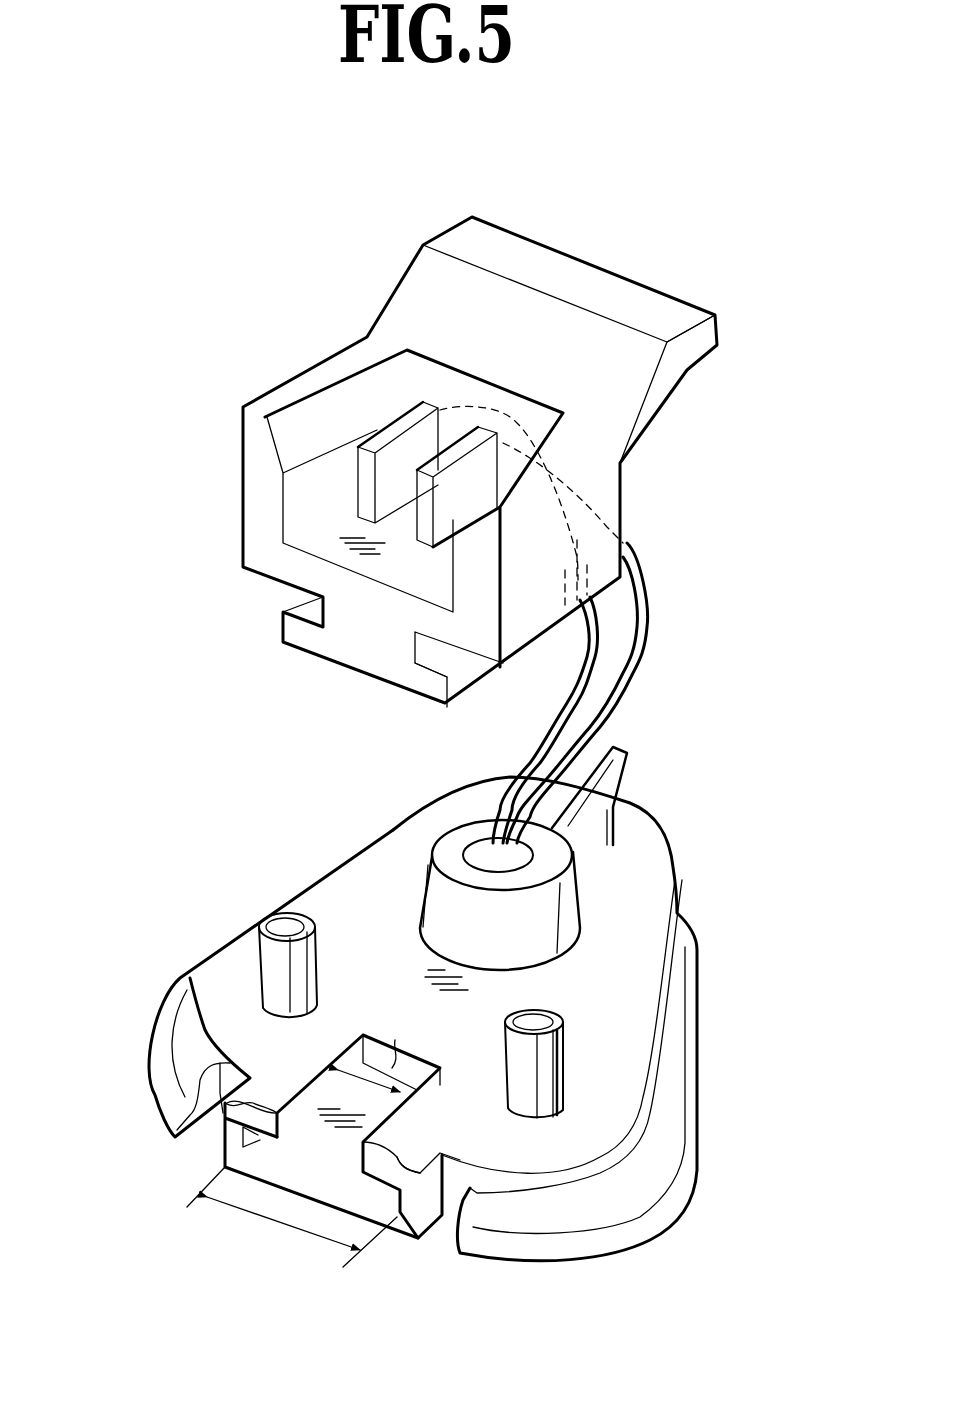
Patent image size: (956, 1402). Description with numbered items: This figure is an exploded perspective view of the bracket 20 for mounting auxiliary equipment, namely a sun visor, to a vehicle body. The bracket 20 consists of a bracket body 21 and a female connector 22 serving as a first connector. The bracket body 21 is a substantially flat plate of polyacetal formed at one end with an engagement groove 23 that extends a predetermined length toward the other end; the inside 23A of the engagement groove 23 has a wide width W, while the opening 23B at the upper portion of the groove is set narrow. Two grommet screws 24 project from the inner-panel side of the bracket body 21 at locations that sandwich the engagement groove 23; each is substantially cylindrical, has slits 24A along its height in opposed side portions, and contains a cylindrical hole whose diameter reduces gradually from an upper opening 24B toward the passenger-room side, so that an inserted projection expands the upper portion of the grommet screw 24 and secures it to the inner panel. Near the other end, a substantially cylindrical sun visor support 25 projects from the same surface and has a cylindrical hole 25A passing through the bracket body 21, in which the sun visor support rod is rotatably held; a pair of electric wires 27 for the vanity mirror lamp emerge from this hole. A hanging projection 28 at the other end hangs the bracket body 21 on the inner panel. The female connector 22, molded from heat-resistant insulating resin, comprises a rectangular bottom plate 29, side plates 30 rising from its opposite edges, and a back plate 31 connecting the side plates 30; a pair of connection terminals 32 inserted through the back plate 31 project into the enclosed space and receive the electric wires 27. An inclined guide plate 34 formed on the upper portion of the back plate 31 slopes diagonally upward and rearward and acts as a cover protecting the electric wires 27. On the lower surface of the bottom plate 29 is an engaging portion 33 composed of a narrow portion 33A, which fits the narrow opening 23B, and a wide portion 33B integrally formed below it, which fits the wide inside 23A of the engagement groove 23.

The bracket 20 is at (780, 345).
The bracket body 21 is at (713, 930).
The female connector 22 is at (593, 247).
The engagement groove 23 is at (336, 1160).
The inside of the engagement groove 23A is at (253, 1137).
The opening of the engagement groove 23B is at (230, 1063).
The grommet screw 24 is at (320, 940).
The slit 24A is at (267, 917).
The upper opening 24B is at (530, 1023).
The sun visor support 25 is at (560, 905).
The cylindrical hole 25A is at (535, 850).
The electric wire 27 is at (597, 637).
The hanging projection 28 is at (627, 748).
The bottom plate 29 is at (343, 600).
The side plate 30 is at (255, 468).
The back plate 31 is at (447, 383).
The connection terminal 32 is at (433, 457).
The engaging portion 33 is at (360, 643).
The narrow portion 33A is at (412, 682).
The wide portion 33B is at (310, 617).
The inclined guide plate 34 is at (617, 377).
The width of the inside of the engagement groove W is at (300, 1134).